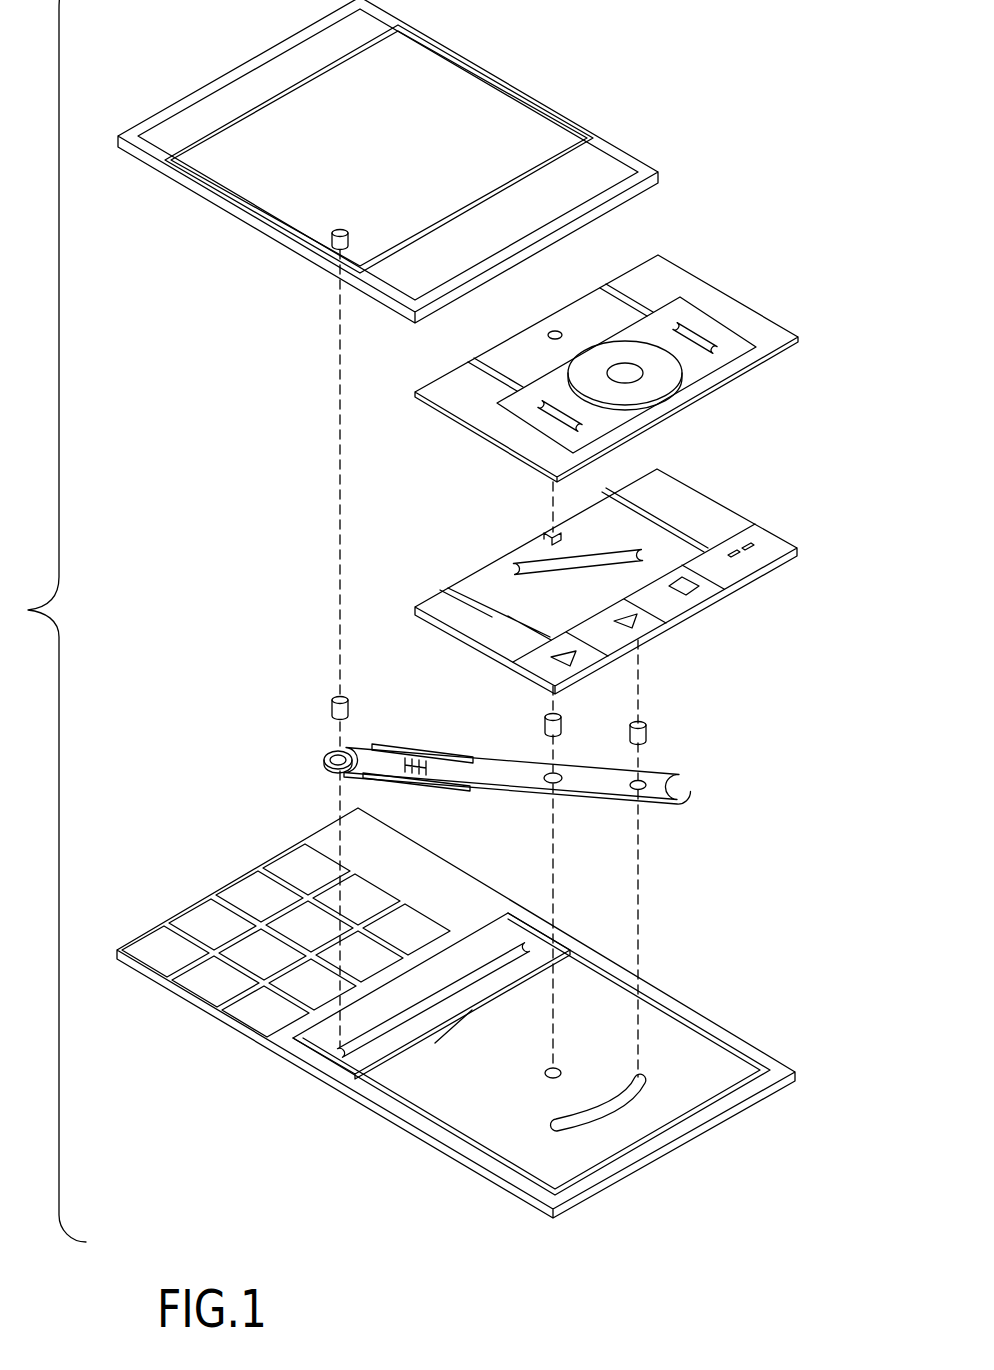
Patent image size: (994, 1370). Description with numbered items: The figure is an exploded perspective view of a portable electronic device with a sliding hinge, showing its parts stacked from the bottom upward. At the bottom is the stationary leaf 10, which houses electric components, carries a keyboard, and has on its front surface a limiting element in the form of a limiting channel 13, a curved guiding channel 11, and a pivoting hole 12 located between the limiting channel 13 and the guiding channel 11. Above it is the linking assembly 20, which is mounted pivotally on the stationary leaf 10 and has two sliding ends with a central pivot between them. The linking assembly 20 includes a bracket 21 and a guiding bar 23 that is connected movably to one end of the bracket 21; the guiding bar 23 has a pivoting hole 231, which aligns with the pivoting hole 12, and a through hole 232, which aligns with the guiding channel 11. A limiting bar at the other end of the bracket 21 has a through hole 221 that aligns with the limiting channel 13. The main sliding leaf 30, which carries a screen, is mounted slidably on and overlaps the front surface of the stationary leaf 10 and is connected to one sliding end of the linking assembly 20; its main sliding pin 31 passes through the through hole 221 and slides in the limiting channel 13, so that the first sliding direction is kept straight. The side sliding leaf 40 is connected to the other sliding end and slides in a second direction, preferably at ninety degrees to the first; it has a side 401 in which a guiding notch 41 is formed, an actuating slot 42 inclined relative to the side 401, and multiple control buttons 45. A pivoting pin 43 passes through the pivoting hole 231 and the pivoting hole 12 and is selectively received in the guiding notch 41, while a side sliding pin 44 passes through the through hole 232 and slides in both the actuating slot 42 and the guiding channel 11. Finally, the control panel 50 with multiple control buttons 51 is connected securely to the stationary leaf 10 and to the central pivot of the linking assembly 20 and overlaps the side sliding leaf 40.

The stationary leaf 10 is at (456, 1013).
The guiding channel 11 is at (610, 1110).
The pivoting hole 12 is at (548, 1077).
The limiting channel 13 is at (343, 1053).
The linking assembly 20 is at (512, 769).
The bracket 21 is at (402, 750).
The through hole 221 is at (328, 753).
The guiding bar 23 is at (497, 778).
The pivoting hole 231 is at (550, 787).
The through hole 232 is at (645, 788).
The main sliding leaf 30 is at (535, 122).
The main sliding pin 31 is at (337, 705).
The side sliding leaf 40 is at (606, 556).
The side 401 is at (441, 590).
The guiding notch 41 is at (538, 540).
The actuating slot 42 is at (620, 555).
The pivoting pin 43 is at (543, 722).
The side sliding pin 44 is at (645, 735).
The control buttons 45 is at (770, 555).
The control panel 50 is at (621, 344).
The control buttons 51 is at (648, 350).